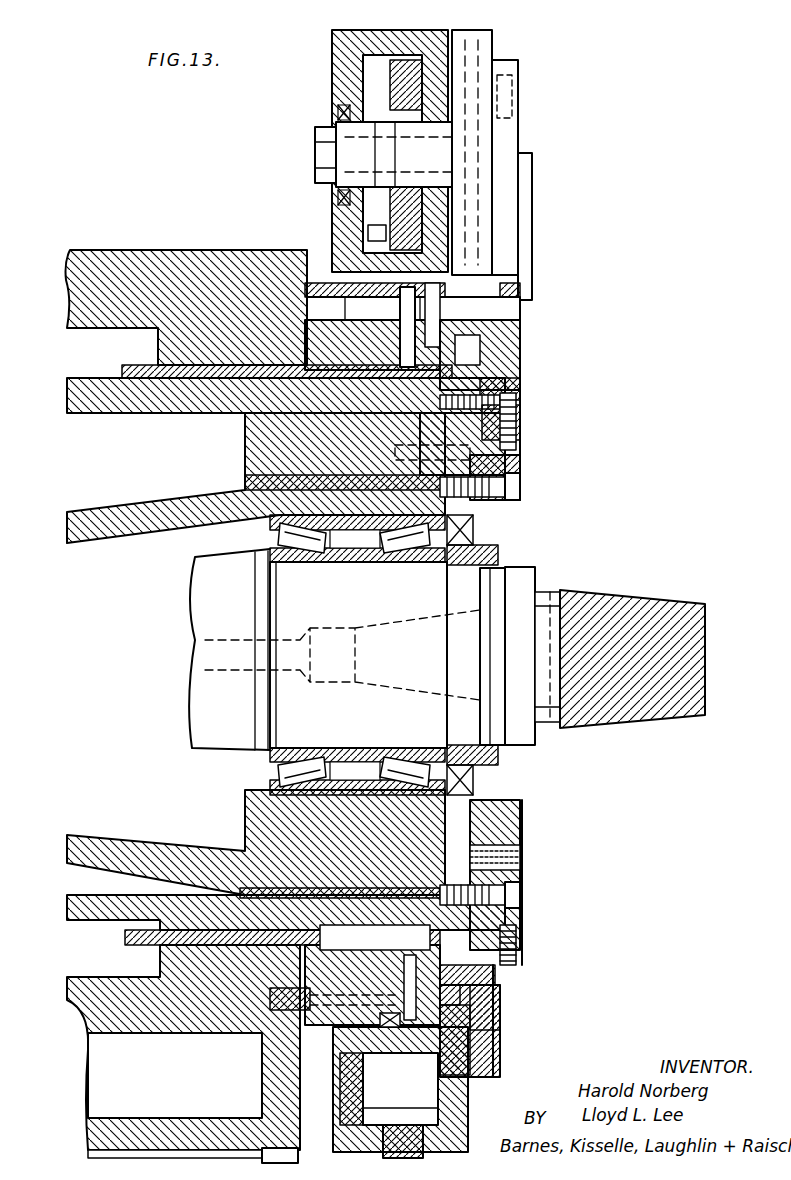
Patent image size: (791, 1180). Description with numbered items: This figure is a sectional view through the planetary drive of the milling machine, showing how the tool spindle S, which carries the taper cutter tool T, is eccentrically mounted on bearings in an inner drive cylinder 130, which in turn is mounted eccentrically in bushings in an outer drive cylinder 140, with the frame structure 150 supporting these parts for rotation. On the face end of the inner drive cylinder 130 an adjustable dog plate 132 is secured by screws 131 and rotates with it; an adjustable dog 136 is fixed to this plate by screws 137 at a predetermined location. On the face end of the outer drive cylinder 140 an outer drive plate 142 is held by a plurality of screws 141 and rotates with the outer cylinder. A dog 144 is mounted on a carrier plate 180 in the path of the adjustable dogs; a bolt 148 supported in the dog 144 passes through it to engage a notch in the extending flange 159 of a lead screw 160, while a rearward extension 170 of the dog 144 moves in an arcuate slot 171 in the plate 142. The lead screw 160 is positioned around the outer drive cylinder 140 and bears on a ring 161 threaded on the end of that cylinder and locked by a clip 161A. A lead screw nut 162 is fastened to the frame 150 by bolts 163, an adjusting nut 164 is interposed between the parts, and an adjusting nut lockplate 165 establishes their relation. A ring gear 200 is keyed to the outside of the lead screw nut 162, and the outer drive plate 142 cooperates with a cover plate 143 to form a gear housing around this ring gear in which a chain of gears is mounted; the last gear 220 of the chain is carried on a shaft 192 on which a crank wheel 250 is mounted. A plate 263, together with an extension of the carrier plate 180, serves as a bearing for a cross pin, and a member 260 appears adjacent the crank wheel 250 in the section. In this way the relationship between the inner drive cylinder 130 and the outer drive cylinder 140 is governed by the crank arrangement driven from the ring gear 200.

The inner drive cylinder 130 is at (143, 510).
The screws 131 is at (522, 488).
The adjustable dog plate 132 is at (513, 467).
The adjustable dog 136 is at (524, 413).
The screws 137 is at (518, 433).
The outer drive cylinder 140 is at (70, 420).
The screws 141 is at (395, 452).
The outer drive plate 142 is at (516, 397).
The cover plate 143 is at (332, 70).
The dog 144 is at (511, 346).
The bolt 148 is at (520, 299).
The frame structure 150 is at (70, 272).
The extending flange 159 is at (482, 313).
The lead screw 160 is at (315, 283).
The ring 161 is at (270, 300).
The clip 161A is at (501, 381).
The lead screw nut 162 is at (365, 1050).
The bolts 163 is at (393, 1050).
The adjusting nut 164 is at (430, 300).
The adjusting nut lockplate 165 is at (463, 1041).
The rearward extension 170 is at (418, 300).
The arcuate slot 171 is at (493, 357).
The carrier plate 180 is at (497, 1016).
The shaft 192 is at (410, 148).
The ring gear 200 is at (376, 233).
The gear 220 is at (396, 86).
The crank wheel 250 is at (457, 40).
The member 260 is at (506, 141).
The plate 263 is at (532, 197).
The tool spindle S is at (209, 742).
The taper cutter tool T is at (648, 706).